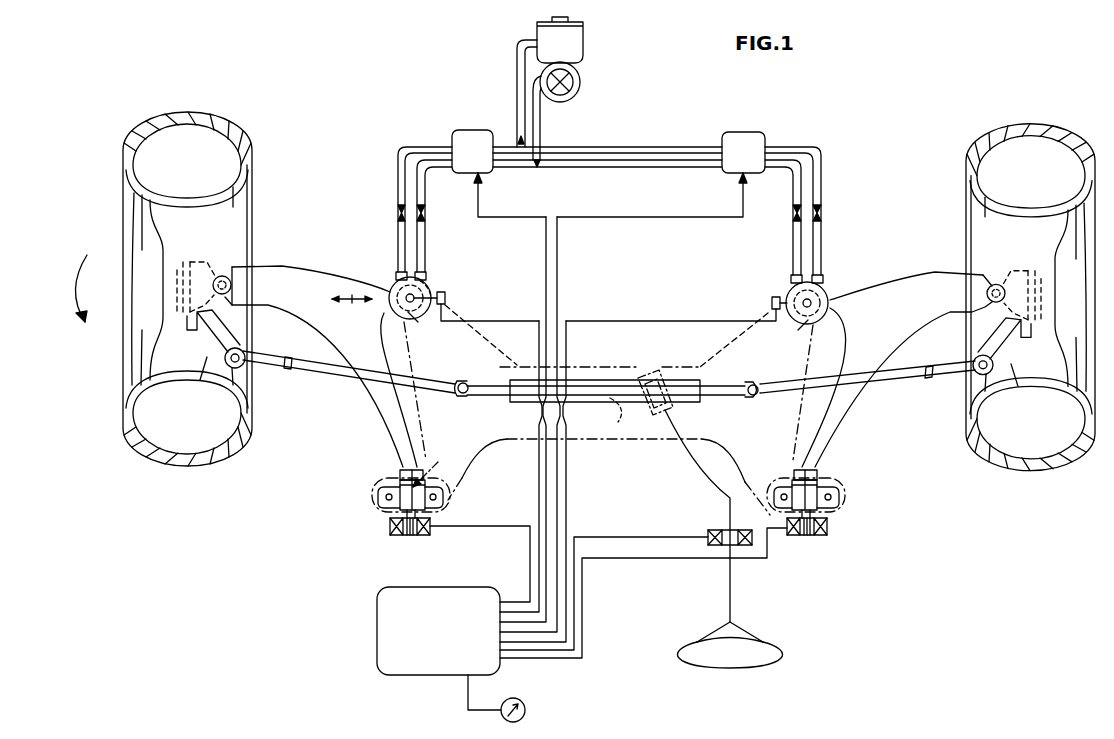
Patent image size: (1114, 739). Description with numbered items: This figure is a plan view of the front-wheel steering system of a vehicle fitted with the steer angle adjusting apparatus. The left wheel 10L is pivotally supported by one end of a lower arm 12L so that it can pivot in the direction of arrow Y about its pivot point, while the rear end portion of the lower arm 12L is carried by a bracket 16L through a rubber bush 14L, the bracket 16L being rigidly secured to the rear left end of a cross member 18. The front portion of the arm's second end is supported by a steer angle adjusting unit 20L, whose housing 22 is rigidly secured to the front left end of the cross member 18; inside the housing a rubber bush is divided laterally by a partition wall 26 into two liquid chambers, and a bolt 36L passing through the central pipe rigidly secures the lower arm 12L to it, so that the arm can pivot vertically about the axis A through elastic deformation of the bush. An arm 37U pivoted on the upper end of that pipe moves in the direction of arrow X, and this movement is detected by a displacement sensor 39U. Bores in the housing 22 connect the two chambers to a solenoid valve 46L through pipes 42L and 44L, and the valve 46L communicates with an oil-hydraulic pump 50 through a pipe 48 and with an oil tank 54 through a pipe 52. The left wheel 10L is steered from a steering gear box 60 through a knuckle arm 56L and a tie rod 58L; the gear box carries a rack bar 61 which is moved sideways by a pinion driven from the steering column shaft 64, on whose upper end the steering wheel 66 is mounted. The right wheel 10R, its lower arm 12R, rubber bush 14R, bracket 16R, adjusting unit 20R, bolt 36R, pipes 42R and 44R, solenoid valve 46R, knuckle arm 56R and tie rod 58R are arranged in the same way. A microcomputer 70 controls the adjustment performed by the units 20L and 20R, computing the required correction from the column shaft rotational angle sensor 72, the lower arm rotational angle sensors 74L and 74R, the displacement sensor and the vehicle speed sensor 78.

The left wheel 10L is at (252, 232).
The right wheel 10R is at (968, 214).
The lower arm 12L is at (322, 283).
The lower arm 12R is at (910, 283).
The rubber bush 14L is at (400, 470).
The rubber bush 14R is at (830, 478).
The bracket 16L is at (378, 505).
The bracket 16R is at (842, 498).
The cross member 18 is at (487, 447).
The steer angle adjusting unit 20L is at (426, 283).
The steer angle adjusting unit 20R is at (830, 290).
The housing 22 is at (396, 278).
The partition wall 26 is at (432, 289).
The bolt 36L is at (418, 322).
The bolt 36R is at (798, 330).
The arm 37U is at (790, 291).
The displacement sensor 39U is at (447, 300).
The pipe 42L is at (396, 160).
The pipe 42R is at (823, 200).
The pipe 44L is at (430, 152).
The pipe 44R is at (796, 215).
The solenoid valve 46L is at (474, 130).
The solenoid valve 46R is at (744, 131).
The pipe 48 is at (541, 128).
The oil-hydraulic pump 50 is at (580, 88).
The pipe 52 is at (516, 70).
The oil tank 54 is at (583, 48).
The knuckle arm 56L is at (207, 383).
The knuckle arm 56R is at (1017, 390).
The tie rod 58L is at (315, 375).
The tie rod 58R is at (902, 380).
The steering gear box 60 is at (577, 414).
The rack bar 61 is at (485, 400).
The steering column shaft 64 is at (728, 513).
The steering wheel 66 is at (772, 640).
The microcomputer 70 is at (432, 678).
The column shaft rotational angle sensor 72 is at (718, 548).
The lower arm rotational angle sensor 74L is at (425, 535).
The lower arm rotational angle sensor 74R is at (815, 537).
The vehicle speed sensor 78 is at (526, 708).
The arrow X is at (352, 314).
The arrow Y is at (72, 287).
The axis A is at (431, 467).